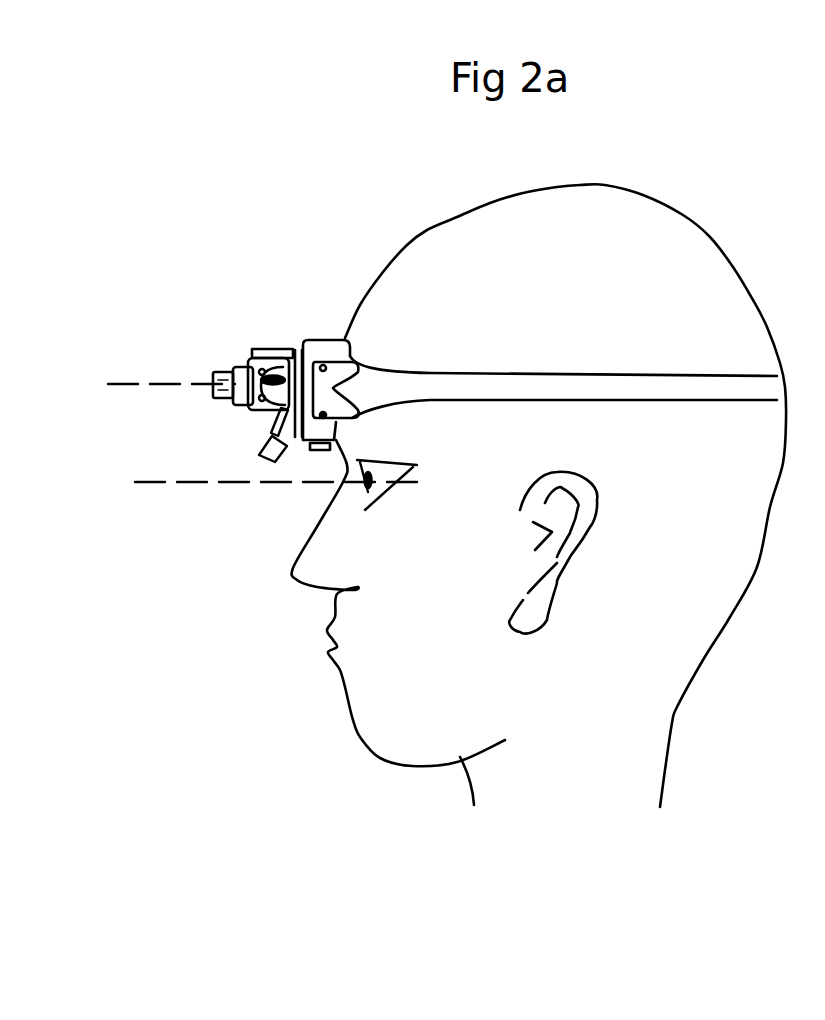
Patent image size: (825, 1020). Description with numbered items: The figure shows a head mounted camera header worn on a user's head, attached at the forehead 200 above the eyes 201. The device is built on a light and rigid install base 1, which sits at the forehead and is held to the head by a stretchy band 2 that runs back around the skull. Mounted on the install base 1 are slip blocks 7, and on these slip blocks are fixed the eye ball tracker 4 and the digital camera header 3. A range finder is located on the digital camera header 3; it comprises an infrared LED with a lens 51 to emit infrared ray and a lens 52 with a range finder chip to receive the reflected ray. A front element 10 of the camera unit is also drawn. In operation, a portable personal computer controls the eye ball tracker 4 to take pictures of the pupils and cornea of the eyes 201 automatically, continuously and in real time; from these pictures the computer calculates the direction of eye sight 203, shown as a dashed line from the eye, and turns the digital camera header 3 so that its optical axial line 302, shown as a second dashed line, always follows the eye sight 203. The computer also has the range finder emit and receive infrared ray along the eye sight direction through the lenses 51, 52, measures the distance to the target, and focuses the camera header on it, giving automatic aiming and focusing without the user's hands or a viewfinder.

The install base 1 is at (328, 345).
The stretchy band 2 is at (705, 388).
The digital camera header 3 is at (256, 350).
The eye ball tracker 4 is at (267, 466).
The slip block 7 is at (296, 437).
The eyepiece / lens cap 10 is at (210, 373).
The lens 51 is at (250, 364).
The lens 52 is at (255, 401).
The forehead 200 is at (375, 333).
The eyes 201 is at (360, 498).
The eye sight 203 is at (190, 486).
The optical axial line 302 is at (172, 385).